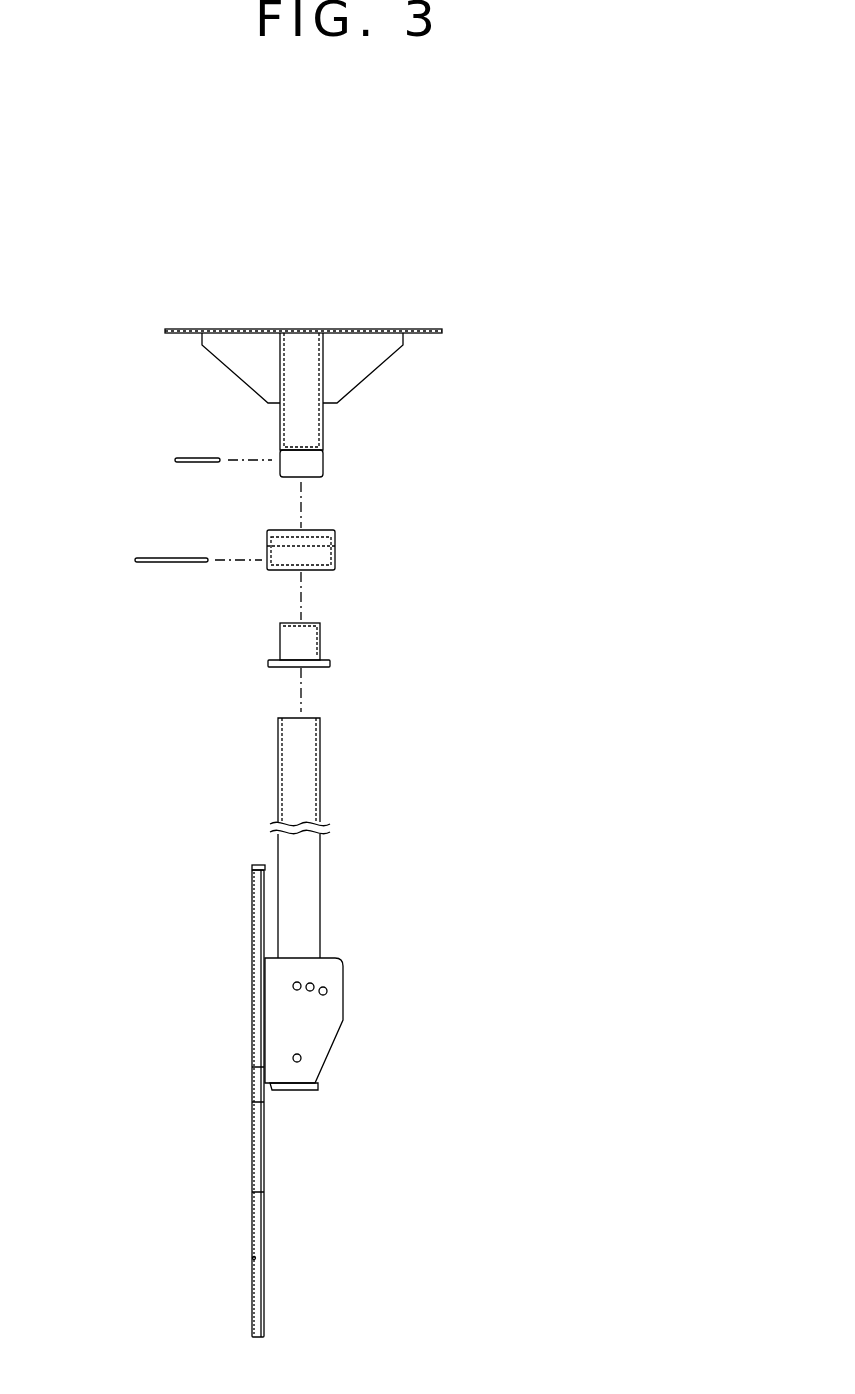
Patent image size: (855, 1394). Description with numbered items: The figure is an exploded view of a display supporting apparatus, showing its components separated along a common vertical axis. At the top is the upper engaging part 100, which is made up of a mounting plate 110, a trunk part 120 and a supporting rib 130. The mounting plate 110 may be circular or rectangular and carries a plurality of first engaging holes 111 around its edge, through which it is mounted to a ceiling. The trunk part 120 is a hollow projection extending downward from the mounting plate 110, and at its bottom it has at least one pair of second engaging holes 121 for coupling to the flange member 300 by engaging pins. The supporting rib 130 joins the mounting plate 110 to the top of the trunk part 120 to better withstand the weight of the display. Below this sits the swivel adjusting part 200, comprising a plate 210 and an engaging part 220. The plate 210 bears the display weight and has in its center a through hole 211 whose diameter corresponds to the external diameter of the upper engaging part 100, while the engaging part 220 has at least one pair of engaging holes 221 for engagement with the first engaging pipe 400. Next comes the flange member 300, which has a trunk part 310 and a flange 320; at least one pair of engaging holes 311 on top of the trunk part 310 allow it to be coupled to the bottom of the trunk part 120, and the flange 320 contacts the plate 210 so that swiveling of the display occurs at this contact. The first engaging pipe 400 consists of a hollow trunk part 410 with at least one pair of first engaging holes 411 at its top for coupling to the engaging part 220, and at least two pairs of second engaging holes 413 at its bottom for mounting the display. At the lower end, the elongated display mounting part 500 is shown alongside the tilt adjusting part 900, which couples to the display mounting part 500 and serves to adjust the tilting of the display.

The upper engaging part 100 is at (282, 359).
The mounting plate 110 is at (255, 325).
The first engaging holes 111 is at (421, 325).
The supporting rib 130 is at (373, 353).
The trunk part 120 is at (313, 410).
The second engaging holes 121 is at (323, 457).
The swivel adjusting part 200 is at (282, 539).
The plate 210 is at (335, 530).
The through hole 211 is at (315, 526).
The engaging part 220 is at (337, 546).
The engaging holes 221 is at (337, 558).
The flange member 300 is at (282, 665).
The trunk part 310 is at (315, 616).
The engaging holes 311 is at (320, 633).
The flange 320 is at (330, 663).
The first engaging pipe 400 is at (282, 981).
The first engaging holes 411 is at (323, 745).
The trunk part 410 is at (320, 870).
The second engaging holes 413 is at (318, 1090).
The display mounting part 500 is at (245, 921).
The tilt adjusting part 900 is at (338, 1048).